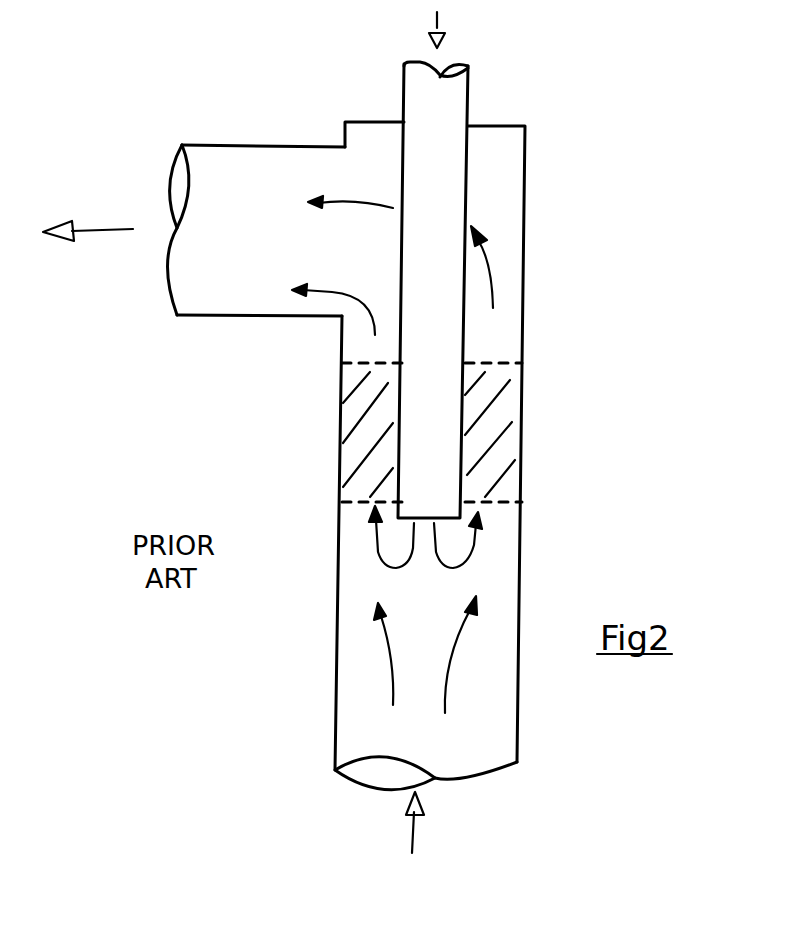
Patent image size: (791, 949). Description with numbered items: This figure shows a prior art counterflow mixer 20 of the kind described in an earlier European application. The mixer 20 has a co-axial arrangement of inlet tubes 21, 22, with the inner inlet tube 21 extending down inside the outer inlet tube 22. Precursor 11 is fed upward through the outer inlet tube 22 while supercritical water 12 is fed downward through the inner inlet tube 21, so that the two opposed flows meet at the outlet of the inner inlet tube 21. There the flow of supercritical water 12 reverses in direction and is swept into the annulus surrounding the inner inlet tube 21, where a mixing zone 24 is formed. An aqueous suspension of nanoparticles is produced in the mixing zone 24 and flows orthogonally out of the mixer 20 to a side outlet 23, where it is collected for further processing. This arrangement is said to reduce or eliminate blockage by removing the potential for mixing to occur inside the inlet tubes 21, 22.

The precursor 11 is at (414, 835).
The supercritical water 12 is at (437, 18).
The mixer 20 is at (558, 290).
The inner inlet tube 21 is at (467, 188).
The inlet tube 22 is at (519, 598).
The outlet 23 is at (165, 190).
The mixing zone 24 is at (508, 412).